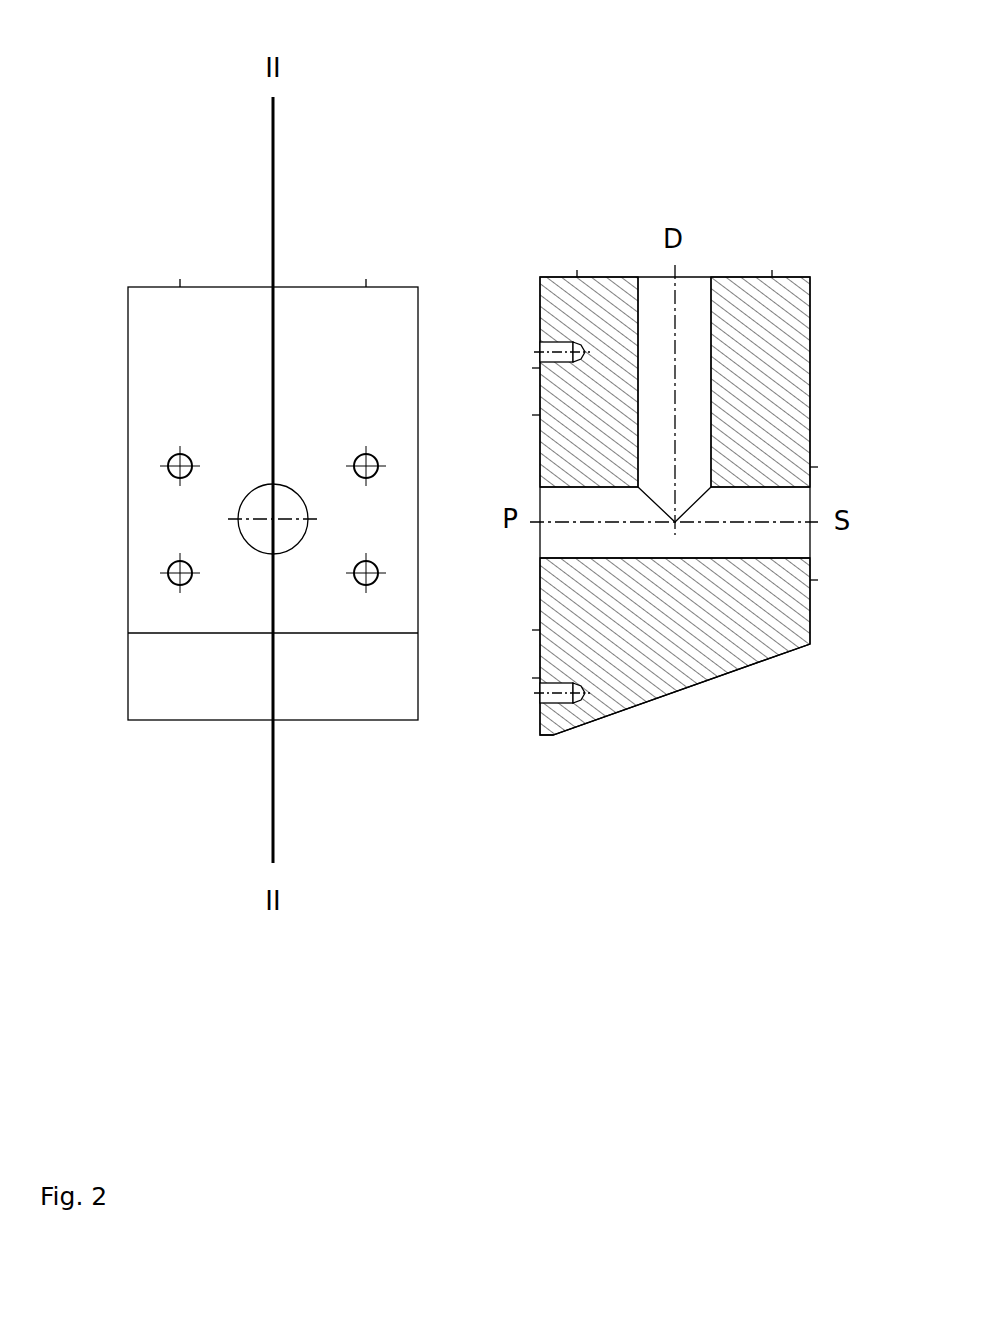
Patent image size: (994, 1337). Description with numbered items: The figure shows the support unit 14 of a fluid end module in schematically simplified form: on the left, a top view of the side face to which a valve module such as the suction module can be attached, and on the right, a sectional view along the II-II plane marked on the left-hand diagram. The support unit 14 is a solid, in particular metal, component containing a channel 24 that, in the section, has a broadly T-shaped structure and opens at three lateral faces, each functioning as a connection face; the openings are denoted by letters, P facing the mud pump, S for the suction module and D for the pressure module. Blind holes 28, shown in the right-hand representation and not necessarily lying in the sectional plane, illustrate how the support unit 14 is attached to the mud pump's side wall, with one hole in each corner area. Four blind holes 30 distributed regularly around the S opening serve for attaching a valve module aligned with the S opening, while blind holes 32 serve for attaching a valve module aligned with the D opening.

The support unit 14 is at (345, 190).
The channel 24 is at (258, 495).
The blind holes 28 is at (540, 352).
The blind holes 30 is at (168, 455).
The blind holes 32 is at (622, 277).